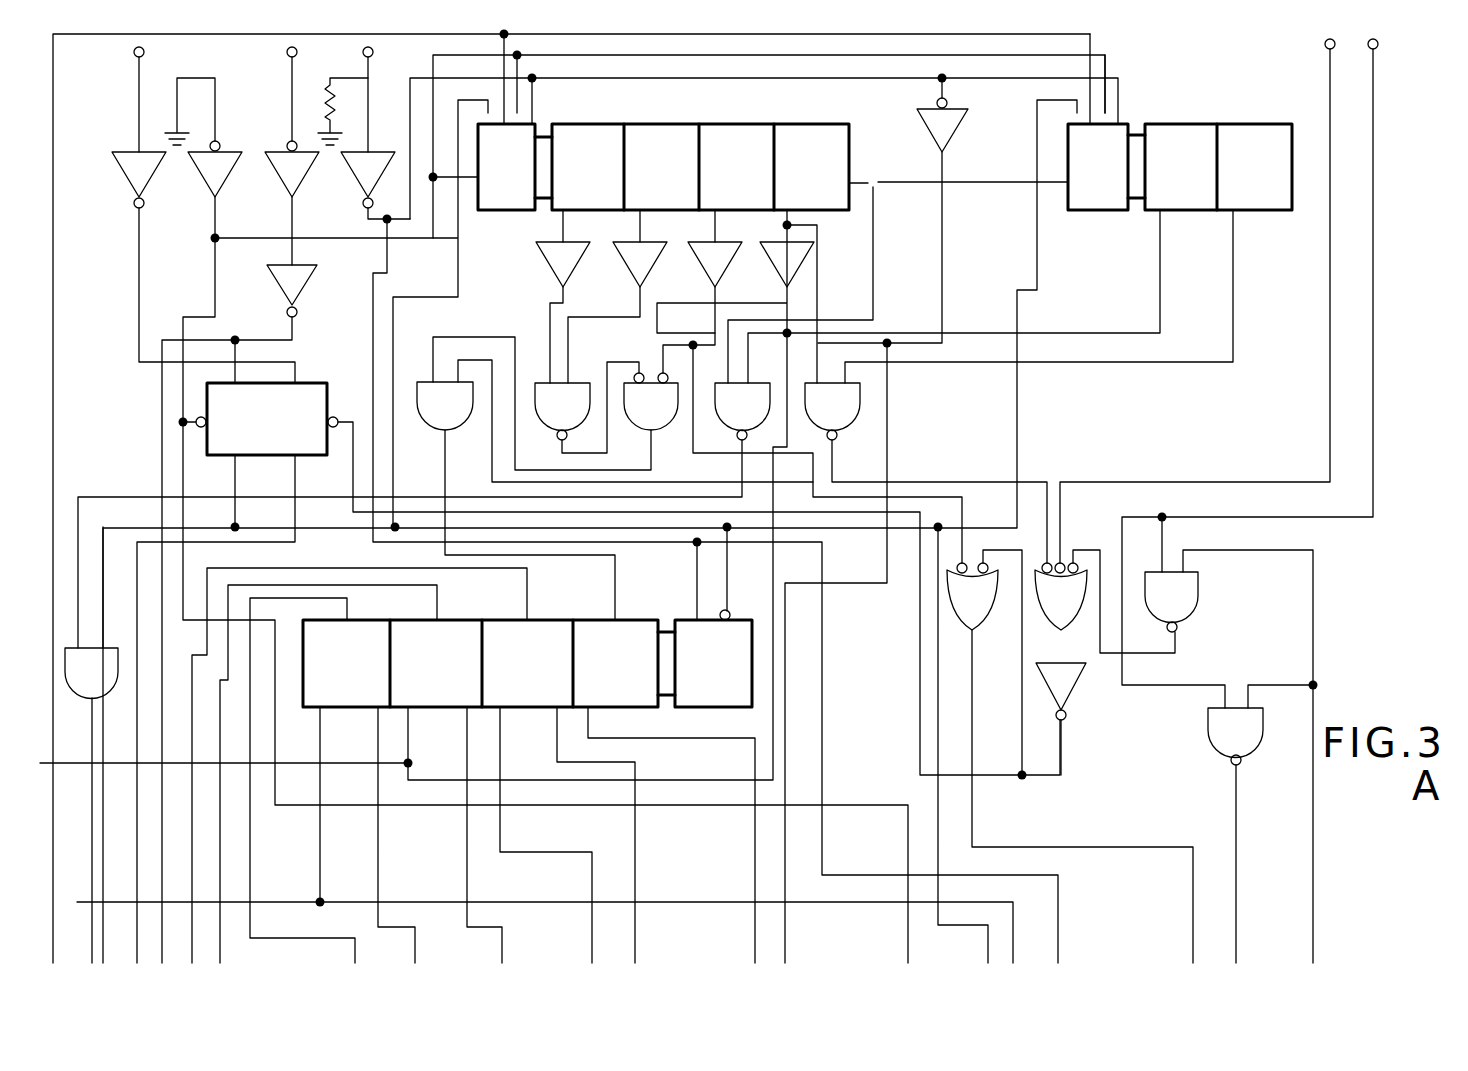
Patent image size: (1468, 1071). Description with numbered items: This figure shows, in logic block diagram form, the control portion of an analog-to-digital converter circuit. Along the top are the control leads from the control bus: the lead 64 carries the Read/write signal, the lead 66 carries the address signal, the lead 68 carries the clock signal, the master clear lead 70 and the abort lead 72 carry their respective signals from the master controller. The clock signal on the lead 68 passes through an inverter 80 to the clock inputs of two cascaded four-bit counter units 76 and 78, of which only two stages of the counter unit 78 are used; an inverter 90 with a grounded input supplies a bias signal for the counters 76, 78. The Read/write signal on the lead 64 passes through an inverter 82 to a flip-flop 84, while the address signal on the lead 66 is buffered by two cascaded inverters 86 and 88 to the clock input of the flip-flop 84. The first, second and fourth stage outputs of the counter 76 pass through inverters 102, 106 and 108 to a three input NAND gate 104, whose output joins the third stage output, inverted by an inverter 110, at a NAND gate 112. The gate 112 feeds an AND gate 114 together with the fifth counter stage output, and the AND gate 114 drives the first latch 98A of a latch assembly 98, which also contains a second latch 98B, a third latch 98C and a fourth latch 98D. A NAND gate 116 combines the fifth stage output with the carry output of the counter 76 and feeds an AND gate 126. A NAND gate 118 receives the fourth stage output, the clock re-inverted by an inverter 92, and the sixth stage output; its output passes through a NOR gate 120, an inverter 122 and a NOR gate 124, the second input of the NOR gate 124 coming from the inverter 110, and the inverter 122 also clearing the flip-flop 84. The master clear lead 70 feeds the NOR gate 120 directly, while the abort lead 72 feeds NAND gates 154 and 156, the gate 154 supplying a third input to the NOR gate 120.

The lead 64 is at (133, 52).
The lead 66 is at (286, 52).
The lead 68 is at (362, 52).
The master clear lead 70 is at (1324, 44).
The abort lead 72 is at (1368, 49).
The counter unit 76 is at (722, 118).
The counter unit 78 is at (1249, 111).
The inverter 80 is at (356, 179).
The inverter 82 is at (125, 182).
The flip-flop 84 is at (303, 383).
The inverter 86 is at (280, 179).
The inverter 88 is at (300, 297).
The inverter 90 is at (203, 179).
The inverter 92 is at (960, 130).
The latch assembly 98 is at (527, 631).
The first latch 98A is at (635, 620).
The second latch 98B is at (537, 620).
The third latch 98C is at (450, 620).
The fourth latch 98D is at (357, 620).
The inverter 102 is at (550, 275).
The three input NAND gate 104 is at (553, 432).
The inverter 106 is at (633, 275).
The inverter 108 is at (778, 275).
The inverter 110 is at (705, 275).
The NAND gate 112 is at (625, 430).
The AND gate 114 is at (441, 433).
The NAND gate 116 is at (735, 432).
The NAND gate 118 is at (843, 437).
The NOR gate 120 is at (1048, 625).
The inverter 122 is at (1068, 712).
The NOR gate 124 is at (963, 625).
The AND gate 126 is at (110, 700).
The NAND gate 154 is at (1182, 622).
The NAND gate 156 is at (1225, 760).